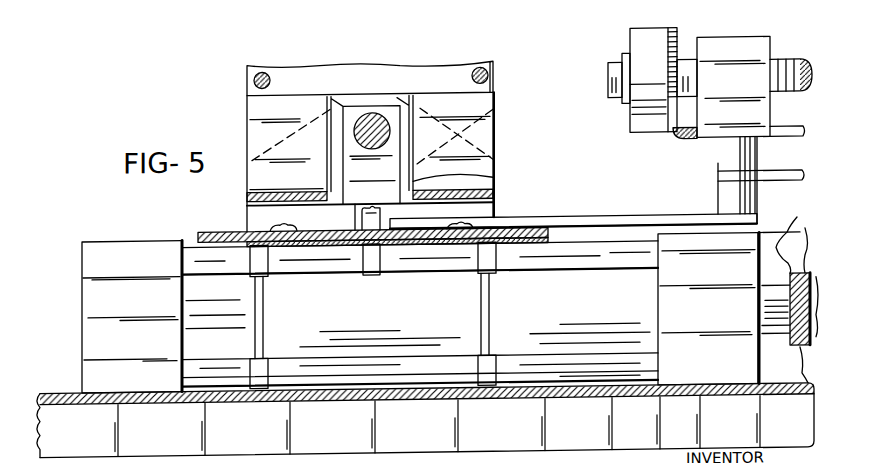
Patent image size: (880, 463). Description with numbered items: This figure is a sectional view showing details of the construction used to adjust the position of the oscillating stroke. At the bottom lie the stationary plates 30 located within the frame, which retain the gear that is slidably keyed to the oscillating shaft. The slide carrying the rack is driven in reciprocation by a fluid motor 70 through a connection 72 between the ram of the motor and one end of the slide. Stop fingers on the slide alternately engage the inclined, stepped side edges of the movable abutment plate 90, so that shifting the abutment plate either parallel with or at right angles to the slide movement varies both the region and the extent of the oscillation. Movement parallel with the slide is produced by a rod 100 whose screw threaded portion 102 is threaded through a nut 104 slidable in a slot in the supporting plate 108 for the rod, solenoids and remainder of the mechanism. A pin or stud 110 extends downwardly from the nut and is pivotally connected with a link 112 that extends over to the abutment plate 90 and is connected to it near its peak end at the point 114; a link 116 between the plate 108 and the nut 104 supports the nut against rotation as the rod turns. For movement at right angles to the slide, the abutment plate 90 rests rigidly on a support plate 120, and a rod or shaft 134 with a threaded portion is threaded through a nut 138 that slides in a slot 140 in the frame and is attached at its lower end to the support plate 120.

The stationary plates 30 is at (264, 442).
The fluid motor 70 is at (302, 312).
The connection 72 is at (794, 240).
The abutment plate 90 is at (227, 228).
The rod 100 is at (790, 68).
The screw threaded portion 102 is at (773, 56).
The nut 104 is at (723, 49).
The supporting plate 108 is at (807, 143).
The pin or stud 110 is at (733, 146).
The link 112 is at (606, 219).
The connection point on abutment plate 114 is at (362, 226).
The link 116 is at (727, 176).
The support plate 120 is at (250, 272).
The rod or shaft 134 is at (366, 114).
The nut 138 is at (452, 152).
The slot 140 is at (415, 187).